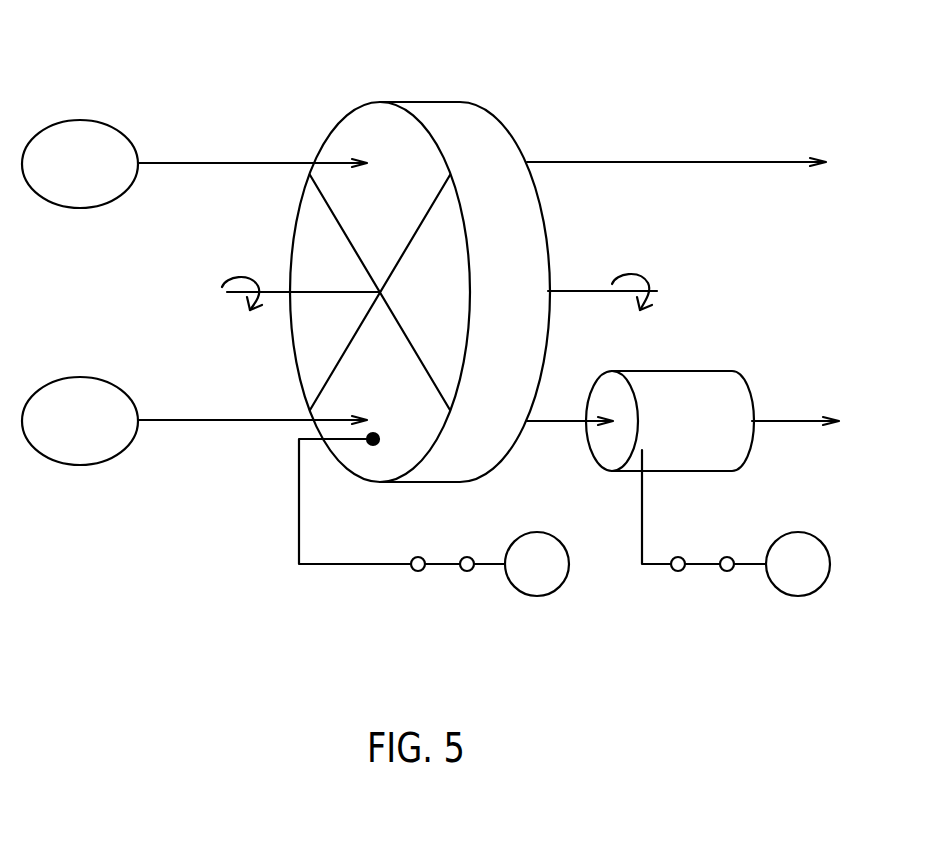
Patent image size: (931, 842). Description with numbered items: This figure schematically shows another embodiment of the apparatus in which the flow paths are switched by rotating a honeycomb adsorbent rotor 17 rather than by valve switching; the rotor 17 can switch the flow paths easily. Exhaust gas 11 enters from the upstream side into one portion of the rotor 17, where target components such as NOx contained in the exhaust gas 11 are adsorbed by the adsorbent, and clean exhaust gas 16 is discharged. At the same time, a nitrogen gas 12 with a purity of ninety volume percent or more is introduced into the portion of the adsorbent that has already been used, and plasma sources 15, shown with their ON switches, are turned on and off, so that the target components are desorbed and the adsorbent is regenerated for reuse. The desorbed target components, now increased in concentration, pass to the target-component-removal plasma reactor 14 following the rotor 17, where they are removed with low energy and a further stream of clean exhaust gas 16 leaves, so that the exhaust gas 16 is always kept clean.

The exhaust gas 11 is at (70, 120).
The nitrogen gas 12 is at (72, 377).
The target-component-removal plasma reactor 14 is at (693, 371).
The plasma sources 15 is at (529, 596).
The clean exhaust gas 16 is at (746, 161).
The rotor 17 is at (439, 101).